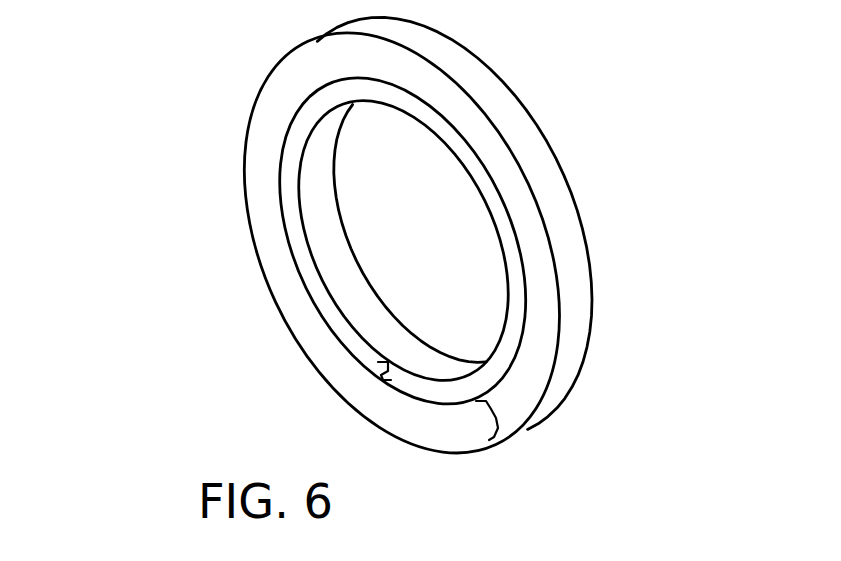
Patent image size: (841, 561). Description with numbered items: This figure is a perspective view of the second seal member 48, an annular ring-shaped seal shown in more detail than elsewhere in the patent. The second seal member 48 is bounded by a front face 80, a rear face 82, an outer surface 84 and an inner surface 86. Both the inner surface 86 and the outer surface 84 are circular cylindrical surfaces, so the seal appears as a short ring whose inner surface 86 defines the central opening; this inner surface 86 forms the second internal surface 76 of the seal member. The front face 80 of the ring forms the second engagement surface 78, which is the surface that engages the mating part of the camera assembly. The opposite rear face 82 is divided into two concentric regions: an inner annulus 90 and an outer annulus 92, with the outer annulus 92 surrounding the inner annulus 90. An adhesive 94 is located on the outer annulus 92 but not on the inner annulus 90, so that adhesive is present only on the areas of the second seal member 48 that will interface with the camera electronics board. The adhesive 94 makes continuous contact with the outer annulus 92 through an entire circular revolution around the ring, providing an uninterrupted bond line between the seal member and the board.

The second seal member 48 is at (147, 249).
The front face 80 is at (452, 252).
The second engagement surface 78 is at (589, 177).
The outer surface 84 is at (578, 343).
The adhesive 94 is at (337, 361).
The rear face 82 is at (302, 258).
The inner surface 86 is at (403, 240).
The second internal surface 76 is at (347, 292).
The inner annulus 90 is at (390, 379).
The outer annulus 92 is at (502, 413).